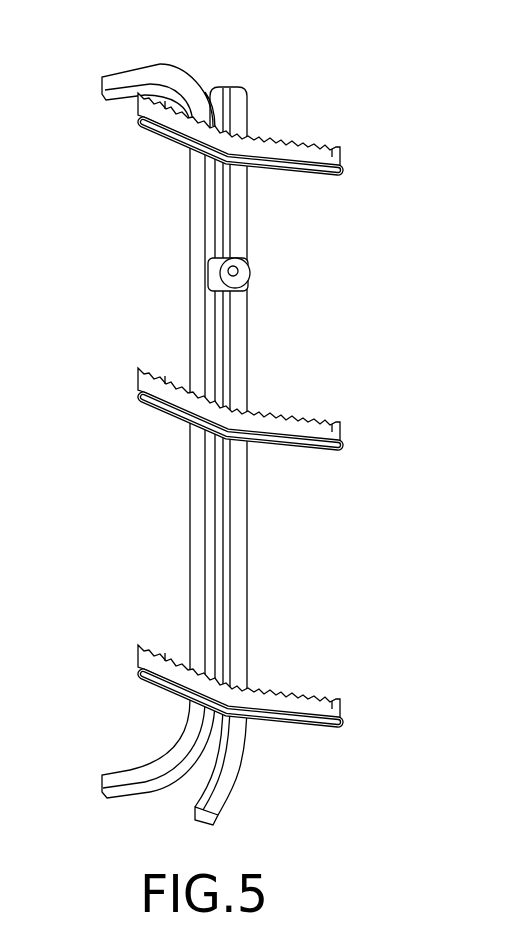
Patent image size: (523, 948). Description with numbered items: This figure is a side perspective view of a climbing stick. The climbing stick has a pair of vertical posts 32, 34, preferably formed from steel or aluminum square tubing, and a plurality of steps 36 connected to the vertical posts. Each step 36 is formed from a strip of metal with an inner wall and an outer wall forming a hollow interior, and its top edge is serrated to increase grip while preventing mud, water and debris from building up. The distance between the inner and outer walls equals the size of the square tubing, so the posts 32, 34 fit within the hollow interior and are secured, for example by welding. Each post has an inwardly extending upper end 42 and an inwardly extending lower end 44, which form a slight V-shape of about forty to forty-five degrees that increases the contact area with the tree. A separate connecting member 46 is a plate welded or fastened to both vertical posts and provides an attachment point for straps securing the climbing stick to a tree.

The vertical post 32 is at (190, 552).
The vertical post 34 is at (247, 563).
The step 36 is at (318, 140).
The upper end 42 is at (126, 70).
The lower end 44 is at (102, 793).
The connecting member 46 is at (252, 274).